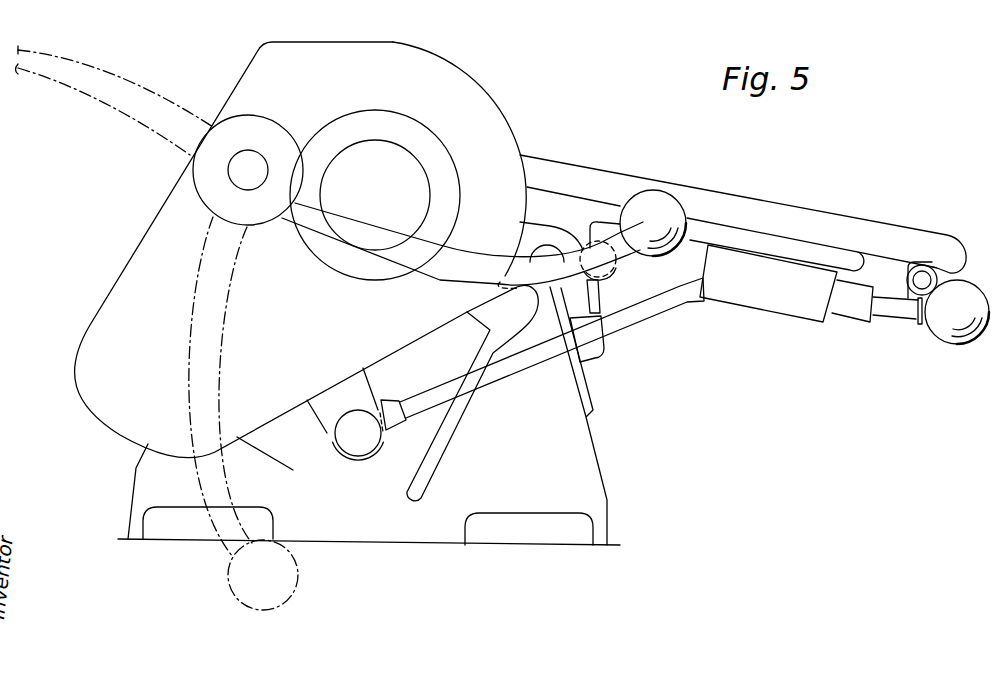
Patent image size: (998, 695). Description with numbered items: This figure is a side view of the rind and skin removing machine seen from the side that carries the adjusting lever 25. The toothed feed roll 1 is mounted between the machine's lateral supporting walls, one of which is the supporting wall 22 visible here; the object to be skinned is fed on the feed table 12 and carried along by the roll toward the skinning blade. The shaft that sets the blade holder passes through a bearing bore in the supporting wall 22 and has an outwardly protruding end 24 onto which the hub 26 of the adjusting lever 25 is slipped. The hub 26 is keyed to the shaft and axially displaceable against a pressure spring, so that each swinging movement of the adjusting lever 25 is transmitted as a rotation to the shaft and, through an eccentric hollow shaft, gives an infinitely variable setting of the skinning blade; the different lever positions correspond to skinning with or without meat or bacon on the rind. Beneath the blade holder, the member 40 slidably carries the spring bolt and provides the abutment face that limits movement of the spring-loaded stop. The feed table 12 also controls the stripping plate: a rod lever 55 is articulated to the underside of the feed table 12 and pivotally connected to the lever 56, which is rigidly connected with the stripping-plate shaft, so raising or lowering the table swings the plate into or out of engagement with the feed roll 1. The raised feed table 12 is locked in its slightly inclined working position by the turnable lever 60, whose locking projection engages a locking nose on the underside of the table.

The feed roll 1 is at (402, 168).
The feed table 12 is at (798, 222).
The lateral supporting wall 22 is at (425, 67).
The outwardly protruding end 24 is at (237, 163).
The adjusting lever 25 is at (540, 248).
The hub 26 is at (207, 195).
The member 40 is at (293, 463).
The rod lever 55 is at (628, 317).
The lever 56 is at (360, 386).
The turnable lever 60 is at (446, 436).